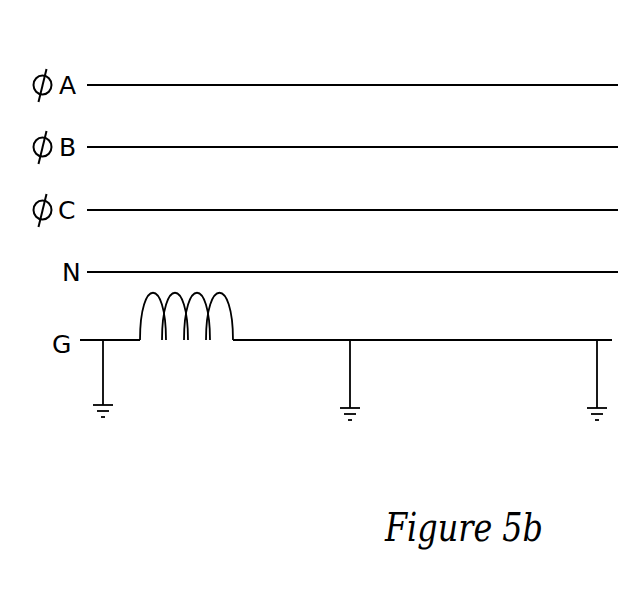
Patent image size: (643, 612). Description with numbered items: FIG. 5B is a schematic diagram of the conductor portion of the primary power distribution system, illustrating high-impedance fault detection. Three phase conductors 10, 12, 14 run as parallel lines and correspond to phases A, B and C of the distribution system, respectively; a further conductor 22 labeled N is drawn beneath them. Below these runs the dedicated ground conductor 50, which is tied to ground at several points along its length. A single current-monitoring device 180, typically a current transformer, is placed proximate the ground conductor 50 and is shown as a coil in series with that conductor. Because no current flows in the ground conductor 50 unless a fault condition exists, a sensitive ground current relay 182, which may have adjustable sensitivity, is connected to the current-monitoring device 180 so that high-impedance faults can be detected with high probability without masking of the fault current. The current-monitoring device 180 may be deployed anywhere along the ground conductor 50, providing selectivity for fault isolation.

The phase conductor 10 is at (470, 85).
The phase conductor 12 is at (435, 147).
The phase conductor 14 is at (435, 210).
The neutral conductor 22 is at (435, 272).
The dedicated ground conductor 50 is at (435, 340).
The current-monitoring device 180 is at (233, 320).
The ground current relay 182 is at (243, 493).